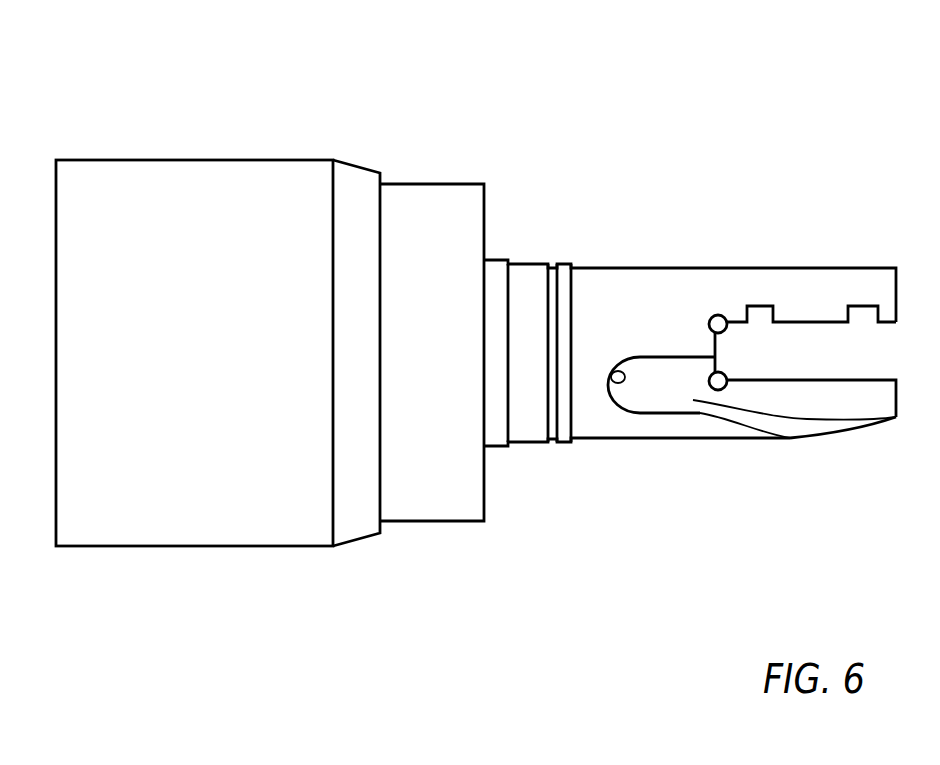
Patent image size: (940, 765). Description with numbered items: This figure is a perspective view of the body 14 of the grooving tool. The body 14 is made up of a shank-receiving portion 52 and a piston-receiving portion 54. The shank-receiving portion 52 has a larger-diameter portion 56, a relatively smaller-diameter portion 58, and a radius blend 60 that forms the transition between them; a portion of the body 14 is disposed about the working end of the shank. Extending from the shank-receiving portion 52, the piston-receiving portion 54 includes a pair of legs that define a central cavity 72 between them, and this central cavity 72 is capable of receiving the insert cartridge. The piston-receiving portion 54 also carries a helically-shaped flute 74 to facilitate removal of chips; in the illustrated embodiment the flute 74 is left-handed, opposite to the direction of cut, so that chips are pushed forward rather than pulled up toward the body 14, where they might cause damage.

The body 14 is at (631, 112).
The shank-receiving portion 52 is at (158, 127).
The piston-receiving portion 54 is at (758, 253).
The larger-diameter portion 56 is at (223, 160).
The smaller-diameter portion 58 is at (437, 184).
The radius blend 60 is at (356, 165).
The central cavity 72 is at (805, 357).
The helically-shaped flute 74 is at (665, 392).